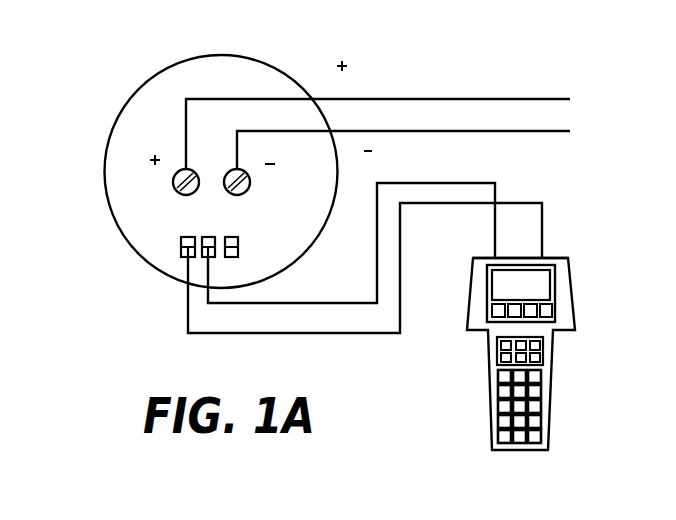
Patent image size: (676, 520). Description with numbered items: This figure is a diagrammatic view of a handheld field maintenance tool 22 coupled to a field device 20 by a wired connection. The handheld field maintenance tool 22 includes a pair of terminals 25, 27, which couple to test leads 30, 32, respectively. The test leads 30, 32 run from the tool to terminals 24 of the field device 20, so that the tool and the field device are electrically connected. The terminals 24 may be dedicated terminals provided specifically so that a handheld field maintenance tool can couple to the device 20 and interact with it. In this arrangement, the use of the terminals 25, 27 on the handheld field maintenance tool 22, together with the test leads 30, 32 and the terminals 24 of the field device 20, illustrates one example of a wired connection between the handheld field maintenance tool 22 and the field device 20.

The field device 20 is at (108, 150).
The handheld field maintenance tool 22 is at (488, 357).
The terminals 24 is at (205, 237).
The terminal 25 is at (495, 258).
The terminal 27 is at (558, 258).
The test lead 30 is at (235, 303).
The test lead 32 is at (277, 333).